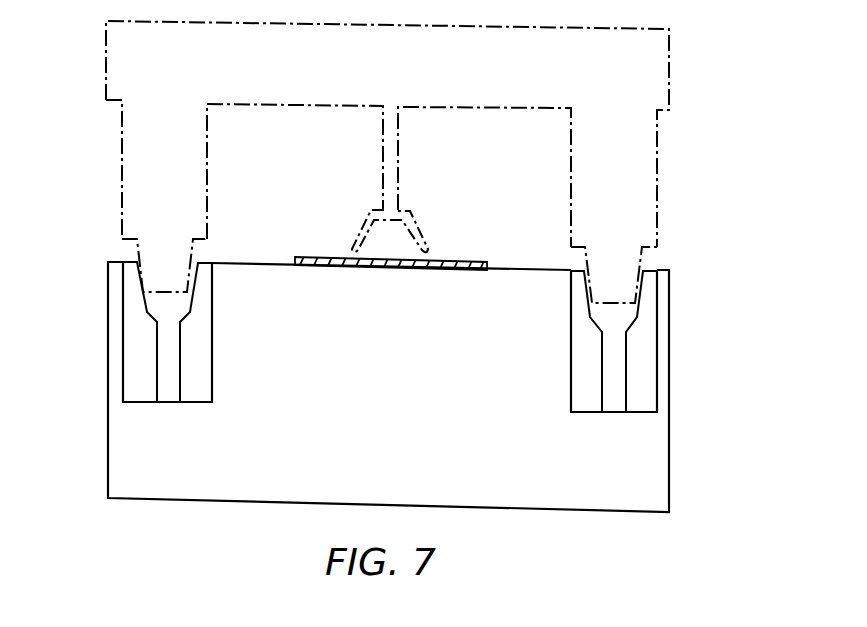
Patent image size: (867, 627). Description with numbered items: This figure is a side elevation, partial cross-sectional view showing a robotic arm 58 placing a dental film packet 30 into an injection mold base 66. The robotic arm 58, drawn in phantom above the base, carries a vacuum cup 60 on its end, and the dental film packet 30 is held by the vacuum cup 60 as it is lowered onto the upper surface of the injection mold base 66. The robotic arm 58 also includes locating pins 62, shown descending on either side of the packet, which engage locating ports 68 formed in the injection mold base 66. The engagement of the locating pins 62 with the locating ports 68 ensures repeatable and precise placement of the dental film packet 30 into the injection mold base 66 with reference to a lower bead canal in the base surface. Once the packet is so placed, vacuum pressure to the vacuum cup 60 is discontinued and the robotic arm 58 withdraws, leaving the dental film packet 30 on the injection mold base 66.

The robotic arm 58 is at (658, 92).
The locating pins 62 is at (180, 277).
The vacuum cup 60 is at (418, 228).
The dental film packet 30 is at (407, 270).
The injection mold base 66 is at (658, 467).
The locating ports 68 is at (187, 306).